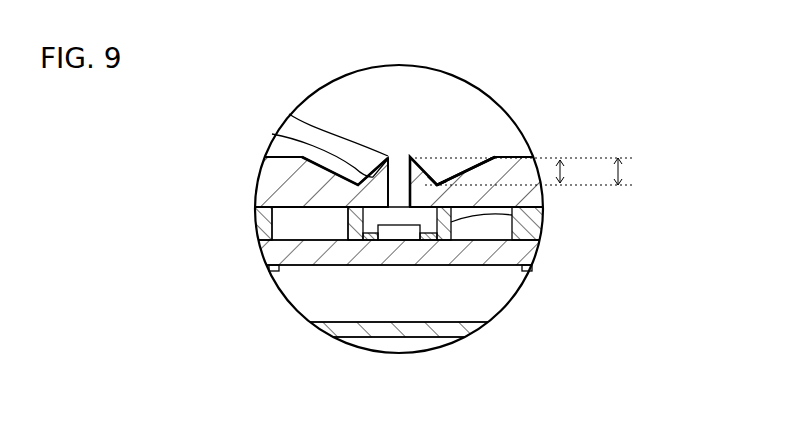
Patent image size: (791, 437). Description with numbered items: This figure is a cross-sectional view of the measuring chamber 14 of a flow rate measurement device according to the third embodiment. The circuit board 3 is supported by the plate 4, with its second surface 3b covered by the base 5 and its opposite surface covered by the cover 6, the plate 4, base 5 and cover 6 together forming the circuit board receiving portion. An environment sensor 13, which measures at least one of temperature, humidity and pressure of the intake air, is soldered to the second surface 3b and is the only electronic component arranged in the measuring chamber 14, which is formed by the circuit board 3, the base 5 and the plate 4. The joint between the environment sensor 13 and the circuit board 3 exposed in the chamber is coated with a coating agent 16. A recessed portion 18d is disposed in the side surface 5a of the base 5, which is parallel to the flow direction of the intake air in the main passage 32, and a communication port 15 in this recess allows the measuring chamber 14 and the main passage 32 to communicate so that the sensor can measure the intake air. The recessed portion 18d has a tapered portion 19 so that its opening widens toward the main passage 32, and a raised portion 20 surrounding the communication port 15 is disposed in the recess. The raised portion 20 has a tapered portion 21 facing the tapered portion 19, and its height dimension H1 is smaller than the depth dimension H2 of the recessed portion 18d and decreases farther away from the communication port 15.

The circuit board 3 is at (472, 253).
The second surface 3b is at (295, 240).
The plate 4 is at (542, 224).
The base 5 is at (483, 160).
The side surface 5a is at (513, 157).
The cover 6 is at (418, 327).
The environment sensor 13 is at (397, 233).
The measuring chamber 14 is at (372, 222).
The communication port 15 is at (398, 167).
The coating agent 16 is at (377, 240).
The recessed portion 18d is at (435, 183).
The tapered portion 19 is at (467, 177).
The raised portion 20 is at (307, 126).
The tapered portion 21 is at (272, 134).
The main passage 32 is at (325, 103).
The height dimension H1 is at (523, 171).
The depth dimension H2 is at (634, 171).